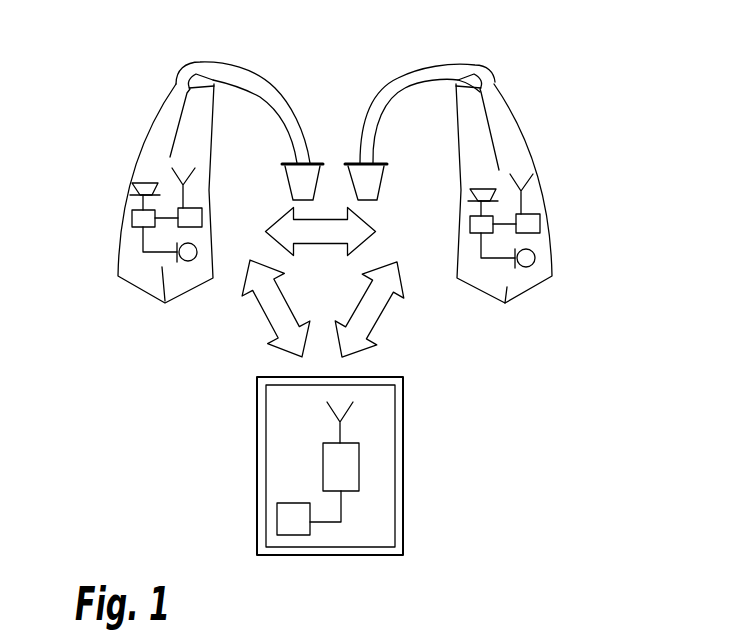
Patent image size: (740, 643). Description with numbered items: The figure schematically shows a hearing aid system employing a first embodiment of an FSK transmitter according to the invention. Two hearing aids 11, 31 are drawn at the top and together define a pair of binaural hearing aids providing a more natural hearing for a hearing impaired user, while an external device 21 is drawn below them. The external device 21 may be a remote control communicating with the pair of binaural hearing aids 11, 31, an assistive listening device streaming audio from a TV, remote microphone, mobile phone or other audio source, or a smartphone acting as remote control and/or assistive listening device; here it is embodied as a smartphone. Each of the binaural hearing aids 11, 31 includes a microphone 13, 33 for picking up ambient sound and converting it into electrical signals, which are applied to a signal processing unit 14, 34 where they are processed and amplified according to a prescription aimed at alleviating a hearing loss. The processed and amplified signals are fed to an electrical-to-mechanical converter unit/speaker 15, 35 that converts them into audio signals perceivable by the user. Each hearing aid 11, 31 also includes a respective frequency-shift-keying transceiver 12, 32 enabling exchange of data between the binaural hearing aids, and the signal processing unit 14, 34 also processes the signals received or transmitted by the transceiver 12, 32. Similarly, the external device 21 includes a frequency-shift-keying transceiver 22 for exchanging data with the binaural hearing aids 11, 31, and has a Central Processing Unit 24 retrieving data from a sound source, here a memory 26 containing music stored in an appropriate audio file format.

The hearing aid 11 is at (162, 107).
The frequency-shift-keying transceiver 12 is at (180, 207).
The microphone 13 is at (178, 253).
The signal processing unit 14 is at (132, 217).
The electrical-to-mechanical converter unit/speaker 15 is at (133, 183).
The external device 21 is at (402, 407).
The frequency-shift-keying transceiver 22 is at (323, 402).
The Central Processing Unit 24 is at (355, 465).
The memory 26 is at (270, 523).
The hearing aid 31 is at (510, 112).
The frequency-shift-keying transceiver 32 is at (535, 215).
The microphone 33 is at (532, 253).
The signal processing unit 34 is at (485, 237).
The electrical-to-mechanical converter unit/speaker 35 is at (480, 187).